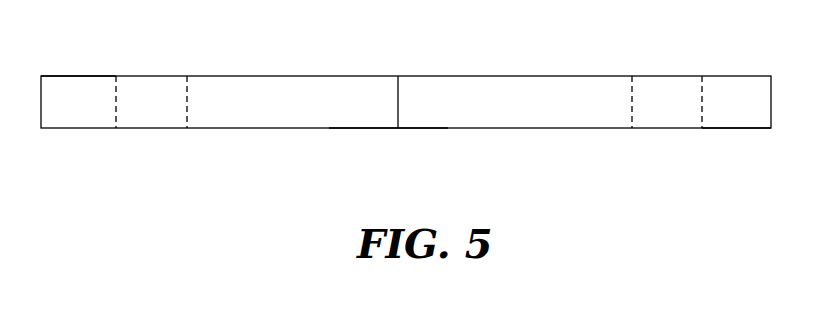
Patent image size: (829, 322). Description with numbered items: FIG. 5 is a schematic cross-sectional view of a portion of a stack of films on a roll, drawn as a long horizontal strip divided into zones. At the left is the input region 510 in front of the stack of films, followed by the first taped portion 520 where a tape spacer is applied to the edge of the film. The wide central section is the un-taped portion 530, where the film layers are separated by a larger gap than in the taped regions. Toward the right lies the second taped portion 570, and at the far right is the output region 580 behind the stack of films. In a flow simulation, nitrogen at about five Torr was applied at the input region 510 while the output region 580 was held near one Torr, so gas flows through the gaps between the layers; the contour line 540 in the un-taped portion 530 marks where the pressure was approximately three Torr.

The input region 510 is at (81, 110).
The first taped portion 520 is at (157, 110).
The un-taped portion 530 is at (448, 115).
The contour line 540 is at (395, 105).
The second taped portion 570 is at (672, 110).
The output region 580 is at (747, 110).